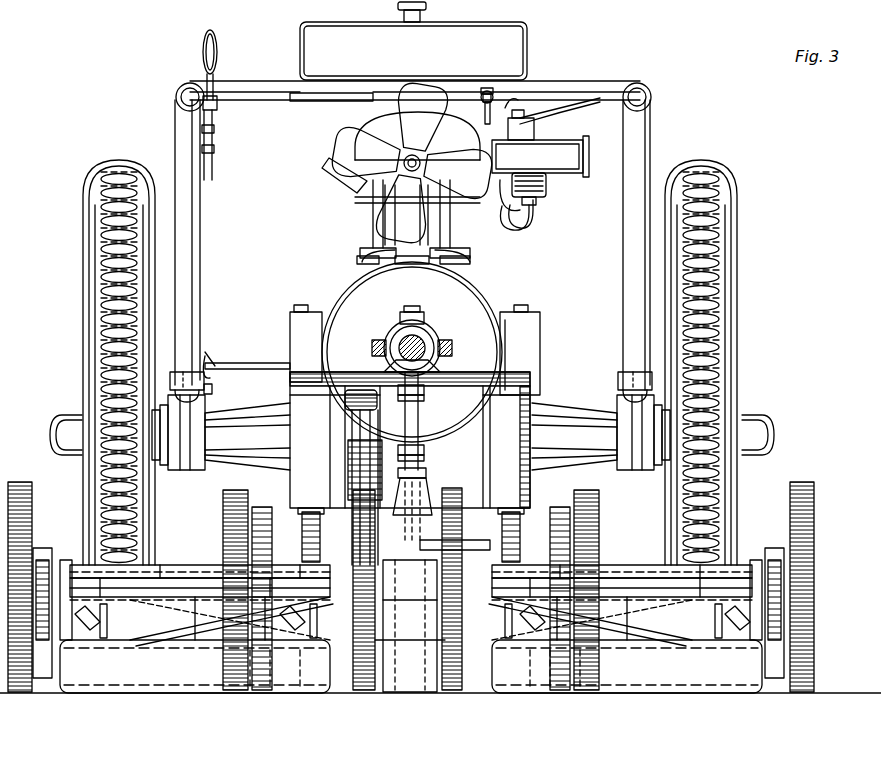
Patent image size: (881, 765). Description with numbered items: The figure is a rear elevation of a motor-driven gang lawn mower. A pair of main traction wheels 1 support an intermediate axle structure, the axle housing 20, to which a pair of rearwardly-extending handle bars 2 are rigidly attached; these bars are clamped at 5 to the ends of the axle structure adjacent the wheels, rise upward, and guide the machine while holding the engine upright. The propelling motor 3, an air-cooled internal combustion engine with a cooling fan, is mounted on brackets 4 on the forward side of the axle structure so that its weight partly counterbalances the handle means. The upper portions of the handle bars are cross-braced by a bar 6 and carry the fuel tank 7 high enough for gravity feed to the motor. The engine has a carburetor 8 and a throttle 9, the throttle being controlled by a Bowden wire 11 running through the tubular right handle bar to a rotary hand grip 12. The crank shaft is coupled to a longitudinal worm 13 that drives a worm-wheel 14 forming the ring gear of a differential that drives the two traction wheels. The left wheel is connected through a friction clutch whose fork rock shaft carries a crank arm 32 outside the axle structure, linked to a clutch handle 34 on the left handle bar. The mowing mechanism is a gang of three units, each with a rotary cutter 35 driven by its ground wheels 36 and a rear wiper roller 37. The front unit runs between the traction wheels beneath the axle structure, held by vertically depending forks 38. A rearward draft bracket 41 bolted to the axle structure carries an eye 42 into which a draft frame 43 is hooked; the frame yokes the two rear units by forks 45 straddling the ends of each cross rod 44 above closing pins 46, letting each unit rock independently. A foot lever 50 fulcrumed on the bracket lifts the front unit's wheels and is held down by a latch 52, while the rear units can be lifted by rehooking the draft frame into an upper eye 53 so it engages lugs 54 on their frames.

The traction wheel 1 is at (95, 306).
The handle bar 2 is at (185, 142).
The propelling motor 3 is at (352, 282).
The bracket 4 is at (290, 332).
The clamp 5 is at (213, 390).
The cross-brace bar 6 is at (262, 96).
The fuel tank 7 is at (512, 46).
The carburetor 8 is at (566, 150).
The throttle 9 is at (492, 98).
The Bowden wire 11 is at (568, 116).
The rotary hand grip 12 is at (648, 96).
The worm 13 is at (404, 344).
The worm-wheel 14 is at (426, 360).
The axle housing 20 is at (249, 415).
The crank arm 32 is at (252, 362).
The clutch handle 34 is at (218, 52).
The rotary cutter 35 is at (185, 640).
The ground wheel 36 is at (18, 480).
The wiper roller 37 is at (262, 690).
The fork 38 is at (306, 520).
The draft bracket 41 is at (326, 506).
The eye 42 is at (430, 694).
The draft frame 43 is at (176, 565).
The cross rod 44 is at (170, 592).
The fork 45 is at (413, 548).
The closing pin 46 is at (90, 640).
The foot lever 50 is at (352, 405).
The latch 52 is at (352, 461).
The upper eye 53 is at (424, 477).
The lug 54 is at (75, 572).